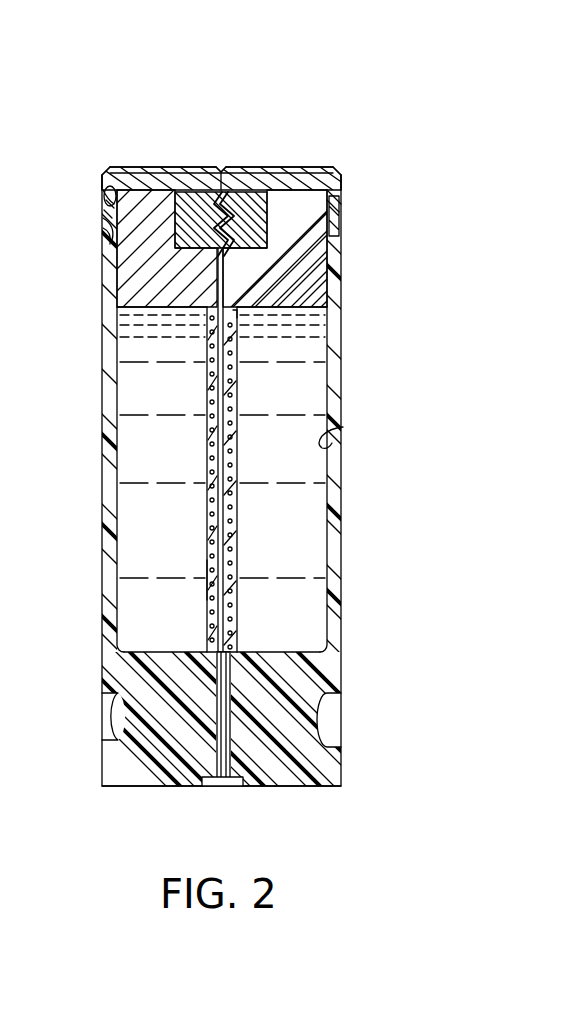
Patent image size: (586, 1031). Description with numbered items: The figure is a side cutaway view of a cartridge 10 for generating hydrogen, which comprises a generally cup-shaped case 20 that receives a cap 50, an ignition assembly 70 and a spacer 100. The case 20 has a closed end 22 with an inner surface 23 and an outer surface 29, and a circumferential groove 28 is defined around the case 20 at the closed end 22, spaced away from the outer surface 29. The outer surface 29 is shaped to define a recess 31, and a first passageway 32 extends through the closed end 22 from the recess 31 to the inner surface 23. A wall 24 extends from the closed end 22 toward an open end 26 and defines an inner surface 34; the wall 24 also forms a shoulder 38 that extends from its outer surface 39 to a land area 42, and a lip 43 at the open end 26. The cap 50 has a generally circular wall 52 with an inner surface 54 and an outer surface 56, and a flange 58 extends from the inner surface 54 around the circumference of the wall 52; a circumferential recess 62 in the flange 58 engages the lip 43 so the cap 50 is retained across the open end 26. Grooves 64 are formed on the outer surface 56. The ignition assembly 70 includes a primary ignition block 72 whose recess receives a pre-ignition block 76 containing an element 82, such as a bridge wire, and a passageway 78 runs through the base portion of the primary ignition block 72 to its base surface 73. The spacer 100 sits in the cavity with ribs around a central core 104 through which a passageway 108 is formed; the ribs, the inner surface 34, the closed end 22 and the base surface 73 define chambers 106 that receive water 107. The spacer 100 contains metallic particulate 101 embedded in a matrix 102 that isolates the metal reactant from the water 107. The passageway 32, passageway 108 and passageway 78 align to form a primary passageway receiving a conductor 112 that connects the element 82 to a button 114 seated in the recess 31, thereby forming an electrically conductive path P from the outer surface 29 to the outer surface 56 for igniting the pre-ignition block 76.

The cartridge 10 is at (368, 115).
The case 20 is at (345, 453).
The closed end 22 is at (287, 695).
The inner surface 23 is at (277, 652).
The wall 24 is at (107, 472).
The open end 26 is at (342, 235).
The circumferential groove 28 is at (320, 723).
The outer surface 29 is at (320, 790).
The recess 31 is at (208, 787).
The first passageway 32 is at (220, 707).
The inner surface 34 is at (343, 427).
The shoulder 38 is at (103, 242).
The outer surface 39 is at (107, 317).
The land area 42 is at (107, 210).
The lip 43 is at (103, 193).
The cap 50 is at (348, 178).
The wall 52 is at (277, 170).
The inner surface 54 is at (130, 175).
The outer surface 56 is at (165, 163).
The flange 58 is at (340, 210).
The circumferential recess 62 is at (317, 170).
The grooves 64 is at (247, 170).
The ignition assembly 70 is at (338, 267).
The primary ignition block 72 is at (110, 275).
The base surface 73 is at (165, 315).
The pre-ignition block 76 is at (187, 170).
The passageway 78 is at (225, 283).
The element 82 is at (265, 237).
The spacer 100 is at (240, 525).
The metallic particulate 101 is at (237, 393).
The matrix 102 is at (237, 362).
The central core 104 is at (207, 433).
The chambers 106 is at (295, 498).
The water 107 is at (150, 543).
The passageway 108 is at (225, 570).
The conductor 112 is at (220, 673).
The button 114 is at (232, 788).
The electrically conductive path P is at (220, 598).